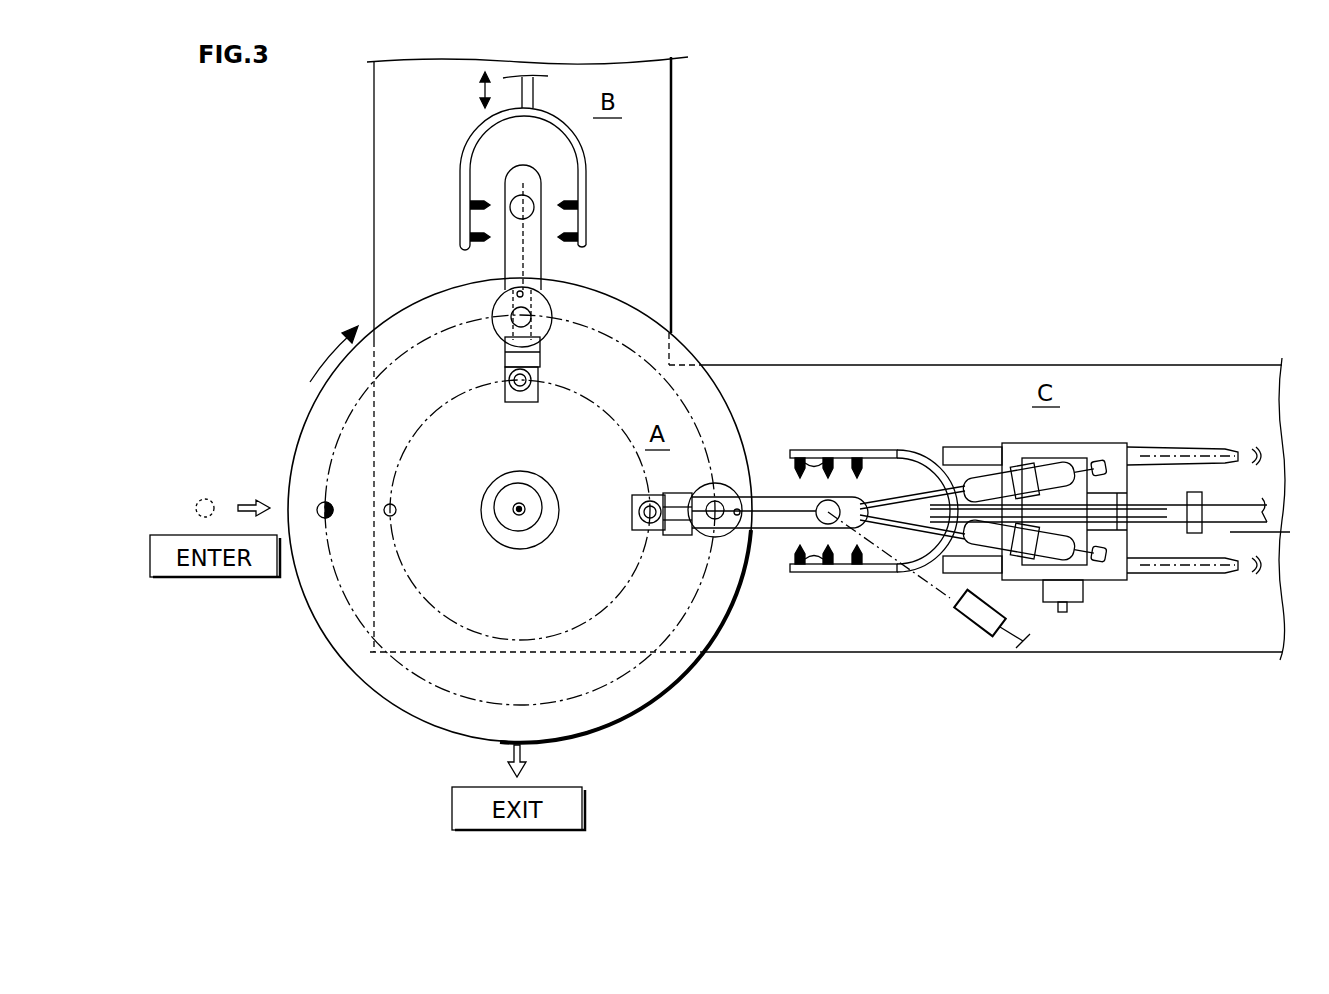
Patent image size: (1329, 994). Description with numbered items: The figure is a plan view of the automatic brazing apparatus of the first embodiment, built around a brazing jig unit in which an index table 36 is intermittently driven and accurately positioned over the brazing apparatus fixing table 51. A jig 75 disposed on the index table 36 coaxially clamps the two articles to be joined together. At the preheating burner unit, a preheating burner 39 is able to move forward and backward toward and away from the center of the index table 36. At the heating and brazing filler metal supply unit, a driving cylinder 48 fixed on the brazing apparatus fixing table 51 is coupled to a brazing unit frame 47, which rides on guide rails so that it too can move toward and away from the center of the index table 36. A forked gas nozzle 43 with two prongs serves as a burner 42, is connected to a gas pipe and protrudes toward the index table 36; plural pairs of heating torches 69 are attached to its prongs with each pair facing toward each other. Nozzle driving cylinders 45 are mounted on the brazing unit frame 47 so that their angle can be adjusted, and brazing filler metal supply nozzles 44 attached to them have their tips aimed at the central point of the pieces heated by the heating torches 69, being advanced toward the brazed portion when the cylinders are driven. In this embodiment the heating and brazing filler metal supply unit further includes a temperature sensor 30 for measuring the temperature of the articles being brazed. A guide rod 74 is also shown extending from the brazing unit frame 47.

The temperature sensor 30 is at (1002, 610).
The index table 36 is at (697, 357).
The preheating burner 39 is at (580, 173).
The burner 42 is at (874, 476).
The forked gas nozzle 43 is at (878, 450).
The brazing filler metal supply nozzle 44 is at (910, 460).
The nozzle driving cylinder 45 is at (992, 468).
The brazing unit frame 47 is at (1100, 443).
The driving cylinder 48 is at (1222, 500).
The brazing apparatus fixing table 51 is at (963, 385).
The heating torch 69 is at (810, 460).
The guide rod 74 is at (1205, 580).
The jig 75 is at (772, 500).